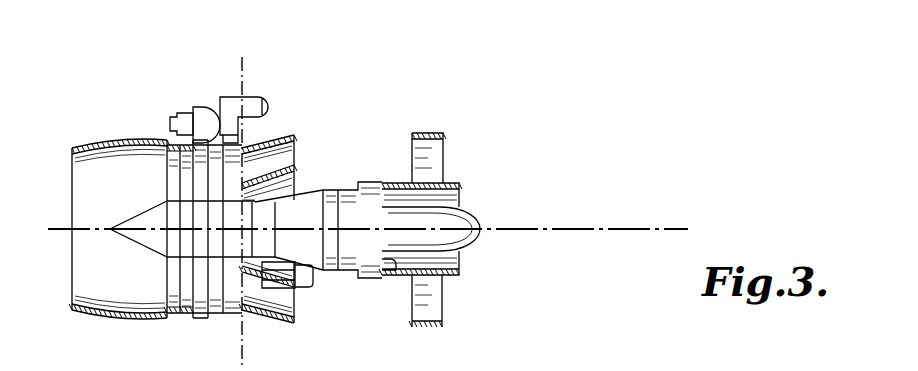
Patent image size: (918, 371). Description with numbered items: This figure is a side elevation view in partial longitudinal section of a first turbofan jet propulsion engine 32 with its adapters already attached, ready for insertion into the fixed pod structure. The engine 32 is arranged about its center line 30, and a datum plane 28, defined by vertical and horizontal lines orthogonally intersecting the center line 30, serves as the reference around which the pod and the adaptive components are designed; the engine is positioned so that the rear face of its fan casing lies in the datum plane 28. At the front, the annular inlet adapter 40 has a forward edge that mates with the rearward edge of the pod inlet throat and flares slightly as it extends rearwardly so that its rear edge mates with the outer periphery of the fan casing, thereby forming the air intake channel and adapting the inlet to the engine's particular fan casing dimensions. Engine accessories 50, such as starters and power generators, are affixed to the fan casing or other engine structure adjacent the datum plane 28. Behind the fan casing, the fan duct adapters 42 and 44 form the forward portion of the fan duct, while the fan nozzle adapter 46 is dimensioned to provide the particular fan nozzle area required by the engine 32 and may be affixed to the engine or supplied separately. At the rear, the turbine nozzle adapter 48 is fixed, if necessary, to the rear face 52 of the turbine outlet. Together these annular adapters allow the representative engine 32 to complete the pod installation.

The datum plane 28 is at (245, 69).
The center line 30 is at (55, 228).
The turbofan jet propulsion engine 32 is at (330, 189).
The inlet adapter 40 is at (104, 146).
The fan duct adapter 42 is at (275, 144).
The fan duct adapter 44 is at (296, 171).
The fan nozzle adapter 46 is at (432, 136).
The turbine nozzle adapter 48 is at (462, 185).
The engine accessories 50 is at (200, 100).
The rear face 52 is at (394, 271).